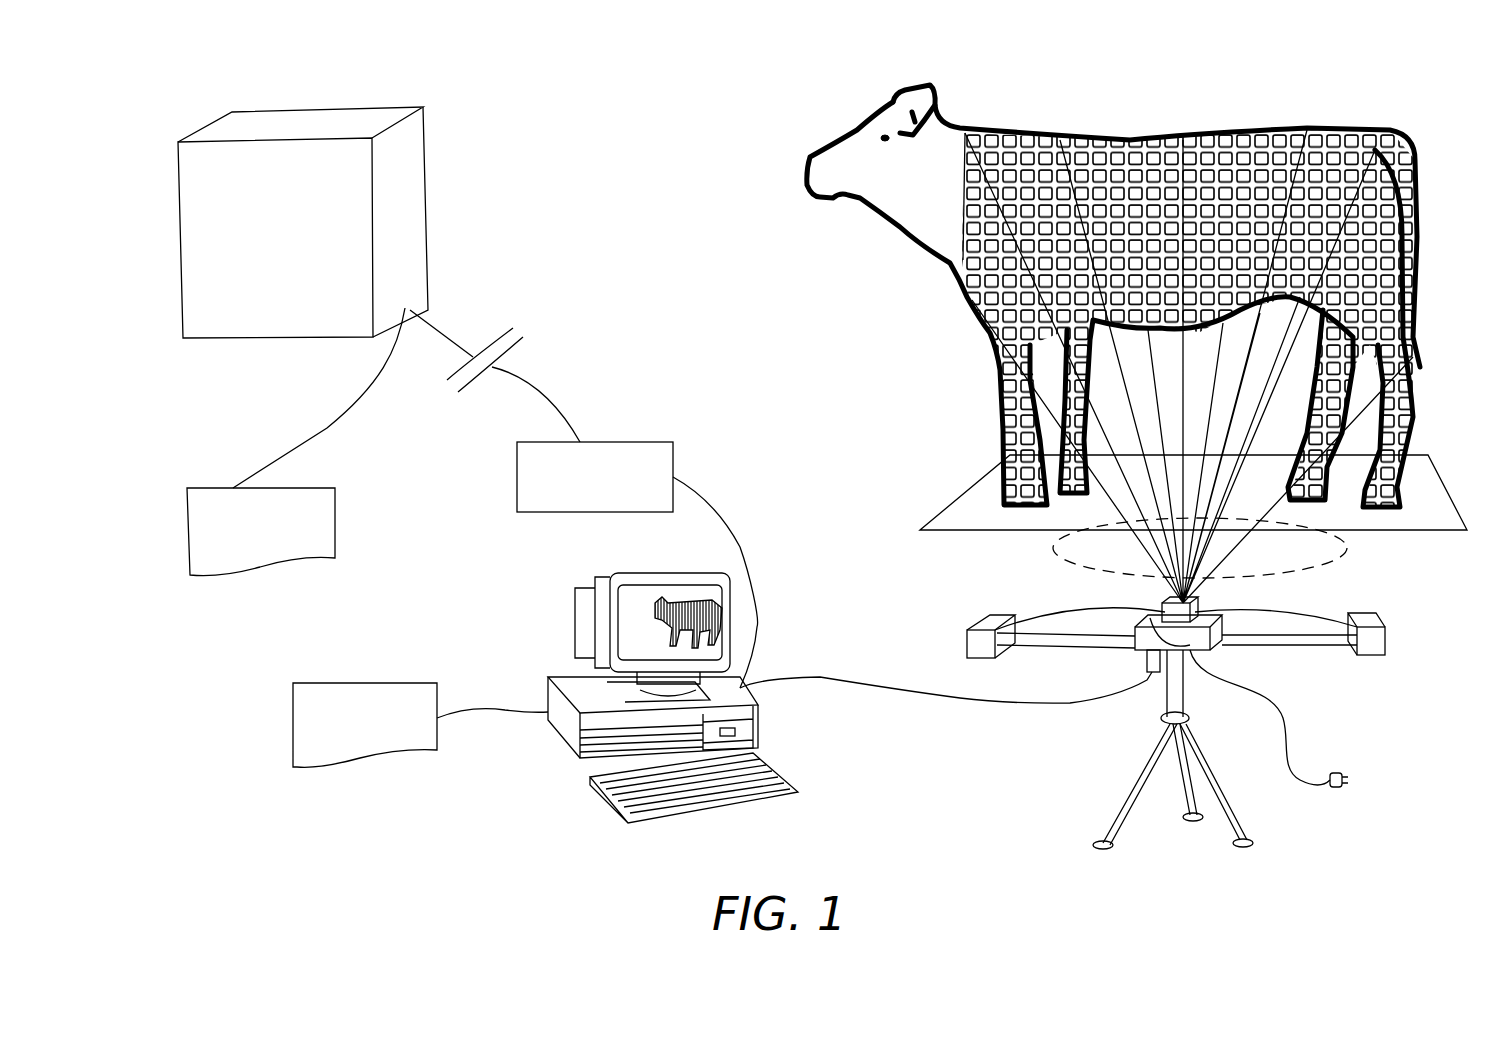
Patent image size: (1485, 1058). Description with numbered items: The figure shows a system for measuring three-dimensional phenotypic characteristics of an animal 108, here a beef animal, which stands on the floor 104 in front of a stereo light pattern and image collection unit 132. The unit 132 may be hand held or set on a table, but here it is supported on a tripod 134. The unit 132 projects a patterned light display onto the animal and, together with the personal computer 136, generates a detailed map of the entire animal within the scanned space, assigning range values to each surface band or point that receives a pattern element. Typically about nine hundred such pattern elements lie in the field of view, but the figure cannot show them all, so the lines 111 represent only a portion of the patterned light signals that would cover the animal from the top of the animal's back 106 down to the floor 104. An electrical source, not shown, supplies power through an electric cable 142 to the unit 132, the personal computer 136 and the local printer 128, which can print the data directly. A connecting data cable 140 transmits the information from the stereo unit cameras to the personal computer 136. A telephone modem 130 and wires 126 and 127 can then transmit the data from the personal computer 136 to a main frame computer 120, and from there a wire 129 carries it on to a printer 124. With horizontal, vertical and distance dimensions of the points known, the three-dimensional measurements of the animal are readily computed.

The floor 104 is at (985, 488).
The animal's back 106 is at (1126, 137).
The animal 108 is at (933, 235).
The lines 111 is at (1345, 548).
The main frame computer 120 is at (430, 204).
The printer 124 is at (338, 535).
The wire 126 is at (747, 566).
The wire 127 is at (444, 330).
The local printer 128 is at (310, 683).
The wire 129 is at (330, 426).
The telephone modem 130 is at (632, 442).
The stereo light pattern and image collection unit 132 is at (1108, 605).
The tripod 134 is at (1140, 772).
The personal computer 136 is at (553, 680).
The connecting data cable 140 is at (1020, 706).
The electric cable 142 is at (1283, 717).